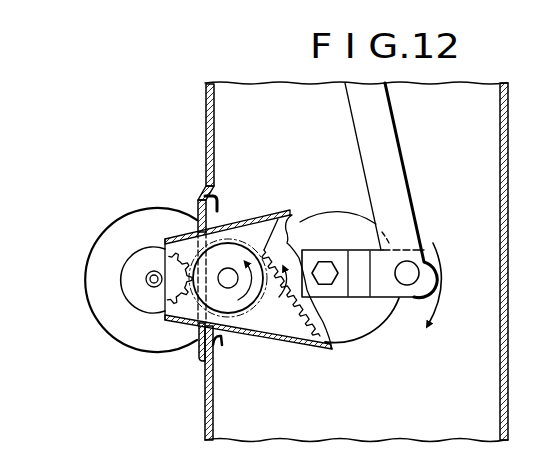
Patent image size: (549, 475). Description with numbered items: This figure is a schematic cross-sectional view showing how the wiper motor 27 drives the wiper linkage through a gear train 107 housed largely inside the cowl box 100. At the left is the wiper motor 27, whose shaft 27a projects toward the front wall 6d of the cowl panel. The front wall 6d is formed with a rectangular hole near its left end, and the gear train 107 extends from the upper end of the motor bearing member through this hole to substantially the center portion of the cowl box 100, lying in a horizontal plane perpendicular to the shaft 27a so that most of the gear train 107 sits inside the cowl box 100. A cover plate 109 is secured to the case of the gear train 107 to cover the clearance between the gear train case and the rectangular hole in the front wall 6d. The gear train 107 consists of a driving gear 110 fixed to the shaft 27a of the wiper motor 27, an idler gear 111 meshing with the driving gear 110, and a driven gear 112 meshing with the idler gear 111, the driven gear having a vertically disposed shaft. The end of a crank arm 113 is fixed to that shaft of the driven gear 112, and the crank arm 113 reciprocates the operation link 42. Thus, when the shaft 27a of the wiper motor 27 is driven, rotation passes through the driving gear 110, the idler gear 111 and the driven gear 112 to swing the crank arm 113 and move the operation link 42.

The cowl box 100 is at (464, 399).
The front wall of the cowl panel 6d is at (206, 408).
The cover plate 109 is at (200, 352).
The wiper motor 27 is at (107, 335).
The shaft of the wiper motor 27a is at (144, 280).
The gear train 107 is at (340, 148).
The driving gear 110 is at (188, 250).
The idler gear 111 is at (236, 250).
The driven gear 112 is at (284, 215).
The crank arm 113 is at (358, 298).
The operation link 42 is at (396, 176).